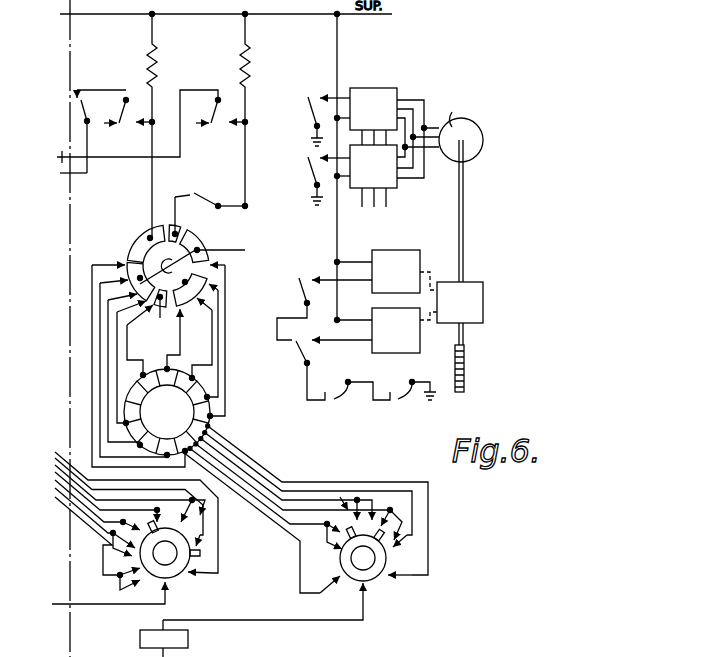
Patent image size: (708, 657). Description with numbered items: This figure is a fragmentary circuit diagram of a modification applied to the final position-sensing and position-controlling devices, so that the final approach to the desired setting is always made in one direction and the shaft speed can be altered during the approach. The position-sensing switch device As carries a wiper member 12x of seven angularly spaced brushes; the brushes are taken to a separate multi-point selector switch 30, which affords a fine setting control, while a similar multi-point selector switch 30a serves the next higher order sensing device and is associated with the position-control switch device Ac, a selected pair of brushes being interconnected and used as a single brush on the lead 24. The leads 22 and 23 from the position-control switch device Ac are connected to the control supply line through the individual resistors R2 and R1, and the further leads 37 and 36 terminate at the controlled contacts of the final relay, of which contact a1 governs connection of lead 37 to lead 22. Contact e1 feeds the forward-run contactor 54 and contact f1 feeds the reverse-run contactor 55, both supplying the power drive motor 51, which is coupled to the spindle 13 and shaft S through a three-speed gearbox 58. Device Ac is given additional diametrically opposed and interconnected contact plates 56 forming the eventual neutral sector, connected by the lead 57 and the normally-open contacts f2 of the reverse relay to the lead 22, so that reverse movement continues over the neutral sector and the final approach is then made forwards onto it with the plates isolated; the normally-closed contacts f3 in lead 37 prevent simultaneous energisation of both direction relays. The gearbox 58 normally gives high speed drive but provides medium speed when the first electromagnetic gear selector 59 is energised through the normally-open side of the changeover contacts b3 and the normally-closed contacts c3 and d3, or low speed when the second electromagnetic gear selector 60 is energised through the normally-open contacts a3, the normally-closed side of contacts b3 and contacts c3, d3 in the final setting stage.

The resistor R1 is at (164, 68).
The resistor R2 is at (251, 111).
The lead 23 is at (152, 207).
The normally-closed contacts f3 is at (101, 131).
The controlled contact a1 is at (116, 123).
The lead 36 is at (130, 126).
The lead 37 is at (60, 173).
The normally-open contacts f2 is at (219, 190).
The lead 57 is at (177, 212).
The lead 22 is at (247, 233).
The position-control switch device Ac is at (130, 242).
The contact plates 56 is at (181, 231).
The position-sensing switch device As is at (168, 412).
The wiper member 12x is at (259, 459).
The multi-point selector switch 30 is at (378, 578).
The multi-point selector switch 30a is at (180, 572).
The lead 24 is at (84, 605).
The contact e1 is at (317, 121).
The contact f1 is at (316, 181).
The forward-run contactor 54 is at (394, 123).
The reverse-run contactor 55 is at (392, 188).
The power drive motor 51 is at (485, 134).
The spindle 13 is at (466, 335).
The 3-speed gearbox 58 is at (483, 282).
The shaft S is at (466, 368).
The second electromagnetic gear selector 60 is at (410, 250).
The first electromagnetic gear selector 59 is at (408, 352).
The normally open contacts a3 is at (291, 309).
The changeover contacts b3 is at (298, 370).
The normally closed contacts c3 is at (360, 402).
The normally closed contacts d3 is at (413, 402).